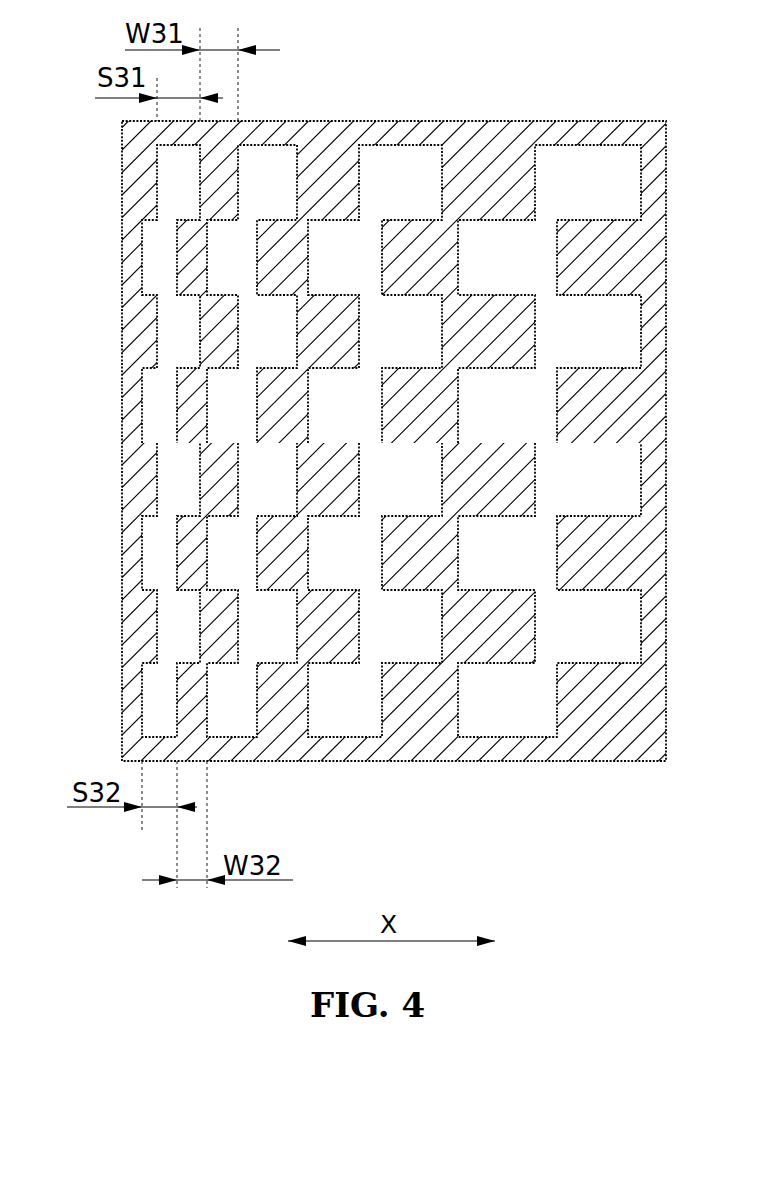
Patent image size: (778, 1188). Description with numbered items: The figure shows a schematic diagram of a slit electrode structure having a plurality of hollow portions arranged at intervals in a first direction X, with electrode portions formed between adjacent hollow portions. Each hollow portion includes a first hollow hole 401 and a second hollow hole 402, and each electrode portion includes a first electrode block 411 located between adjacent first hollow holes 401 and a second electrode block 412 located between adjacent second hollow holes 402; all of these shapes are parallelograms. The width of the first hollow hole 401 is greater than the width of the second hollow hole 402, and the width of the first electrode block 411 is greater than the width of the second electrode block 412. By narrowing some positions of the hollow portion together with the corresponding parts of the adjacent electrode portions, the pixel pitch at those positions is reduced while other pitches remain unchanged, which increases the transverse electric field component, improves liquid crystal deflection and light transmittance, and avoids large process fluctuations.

The first hollow hole 401 is at (270, 165).
The first electrode block 411 is at (327, 163).
The second hollow hole 402 is at (157, 683).
The second electrode block 412 is at (188, 708).